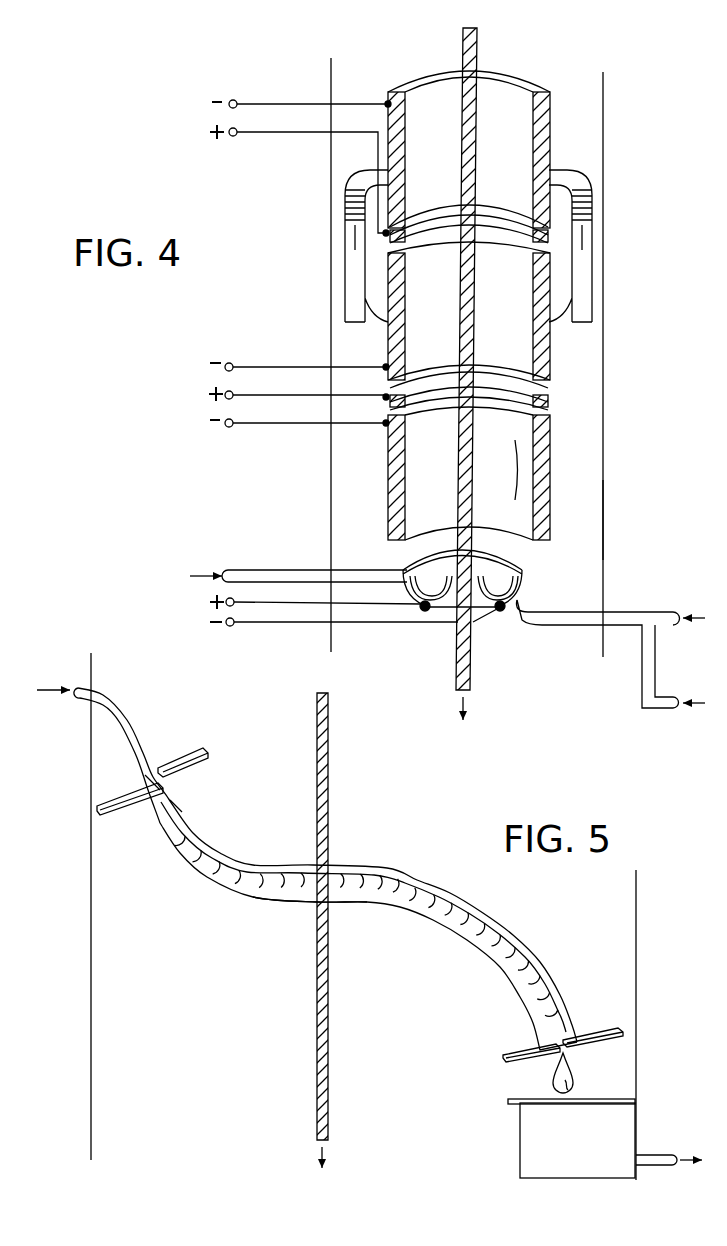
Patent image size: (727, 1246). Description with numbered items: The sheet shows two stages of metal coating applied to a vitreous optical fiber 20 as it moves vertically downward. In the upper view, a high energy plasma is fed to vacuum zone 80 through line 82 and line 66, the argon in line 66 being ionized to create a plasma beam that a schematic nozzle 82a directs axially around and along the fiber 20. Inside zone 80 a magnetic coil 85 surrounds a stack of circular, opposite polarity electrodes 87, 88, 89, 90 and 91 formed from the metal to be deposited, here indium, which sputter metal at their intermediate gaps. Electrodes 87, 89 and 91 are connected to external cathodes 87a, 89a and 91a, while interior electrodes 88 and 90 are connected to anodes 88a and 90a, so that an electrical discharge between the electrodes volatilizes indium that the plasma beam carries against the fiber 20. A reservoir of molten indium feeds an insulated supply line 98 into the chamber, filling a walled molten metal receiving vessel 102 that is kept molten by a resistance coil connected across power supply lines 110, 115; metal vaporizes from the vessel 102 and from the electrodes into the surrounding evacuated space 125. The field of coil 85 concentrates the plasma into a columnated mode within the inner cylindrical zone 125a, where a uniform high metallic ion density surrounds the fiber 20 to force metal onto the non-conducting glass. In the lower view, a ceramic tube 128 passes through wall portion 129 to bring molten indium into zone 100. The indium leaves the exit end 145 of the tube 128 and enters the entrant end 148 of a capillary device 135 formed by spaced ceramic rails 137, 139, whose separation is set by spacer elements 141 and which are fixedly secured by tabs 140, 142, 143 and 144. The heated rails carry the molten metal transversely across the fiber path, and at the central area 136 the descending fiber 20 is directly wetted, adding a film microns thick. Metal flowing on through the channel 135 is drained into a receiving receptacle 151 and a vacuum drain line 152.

In FIG. 4, the fiber 20 is at (482, 41).
In FIG. 5, the fiber 20 is at (331, 738).
In FIG. 4, the zone 80 is at (607, 138).
In FIG. 4, the line 82 is at (618, 611).
In FIG. 4, the nozzle 82a is at (532, 603).
In FIG. 4, the magnetic coil 85 is at (588, 248).
In FIG. 4, the electrode 87 is at (552, 115).
In FIG. 4, the external cathode 87a is at (233, 100).
In FIG. 4, the electrode 88 is at (547, 238).
In FIG. 4, the anode 88a is at (233, 136).
In FIG. 4, the electrode 89 is at (547, 288).
In FIG. 4, the external cathode 89a is at (229, 363).
In FIG. 4, the electrode 90 is at (548, 398).
In FIG. 4, the anode 90a is at (226, 394).
In FIG. 4, the electrode 91 is at (547, 485).
In FIG. 4, the external cathode 91a is at (229, 427).
In FIG. 4, the insulated supply line 98 is at (275, 568).
In FIG. 4, the vessel 102 is at (522, 580).
In FIG. 4, the power supply line 110 is at (300, 622).
In FIG. 4, the power supply line 115 is at (352, 625).
In FIG. 4, the evacuated space 125 is at (583, 520).
In FIG. 4, the inner cylindrical zone 125a is at (515, 447).
In FIG. 4, the line 66 is at (657, 708).
In FIG. 5, the zone 100 is at (639, 934).
In FIG. 5, the ceramic tube 128 is at (122, 708).
In FIG. 5, the wall portion 129 is at (93, 663).
In FIG. 5, the capillary device 135 is at (290, 909).
In FIG. 5, the central area 136 is at (330, 868).
In FIG. 5, the ceramic rail 137 is at (232, 843).
In FIG. 5, the ceramic rail 139 is at (193, 868).
In FIG. 5, the tab 140 is at (105, 810).
In FIG. 5, the spacer element 141 is at (473, 885).
In FIG. 5, the tab 142 is at (196, 746).
In FIG. 5, the tab 143 is at (597, 1027).
In FIG. 5, the tab 144 is at (520, 1050).
In FIG. 5, the exit end 145 is at (182, 803).
In FIG. 5, the entrant end 148 is at (147, 778).
In FIG. 5, the receptacle 151 is at (518, 1133).
In FIG. 5, the vacuum drain line 152 is at (655, 1155).